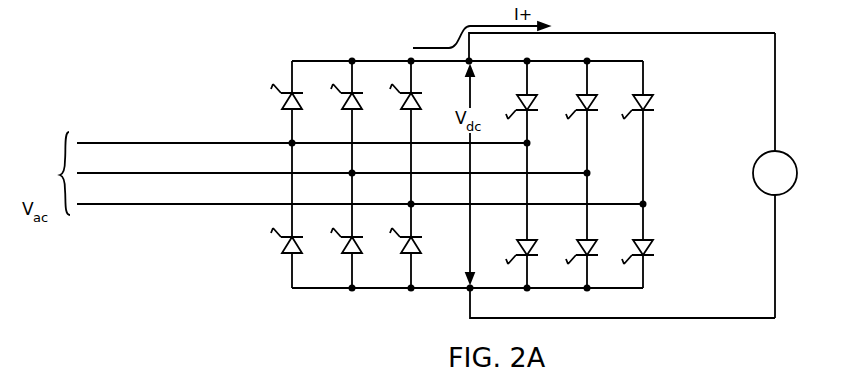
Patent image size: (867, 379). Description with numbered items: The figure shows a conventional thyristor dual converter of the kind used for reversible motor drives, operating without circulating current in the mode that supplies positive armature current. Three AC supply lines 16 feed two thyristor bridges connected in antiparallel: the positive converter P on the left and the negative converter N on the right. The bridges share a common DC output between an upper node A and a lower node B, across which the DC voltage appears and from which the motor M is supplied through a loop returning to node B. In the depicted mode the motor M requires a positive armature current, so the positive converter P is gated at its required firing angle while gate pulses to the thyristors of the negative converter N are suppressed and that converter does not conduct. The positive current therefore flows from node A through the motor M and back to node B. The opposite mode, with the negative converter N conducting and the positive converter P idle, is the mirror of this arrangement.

The three-phase AC input lines 16 is at (60, 175).
The positive converter P is at (329, 174).
The negative converter N is at (601, 174).
The DC output node A is at (621, 49).
The DC output node B is at (613, 302).
The motor M is at (775, 175).